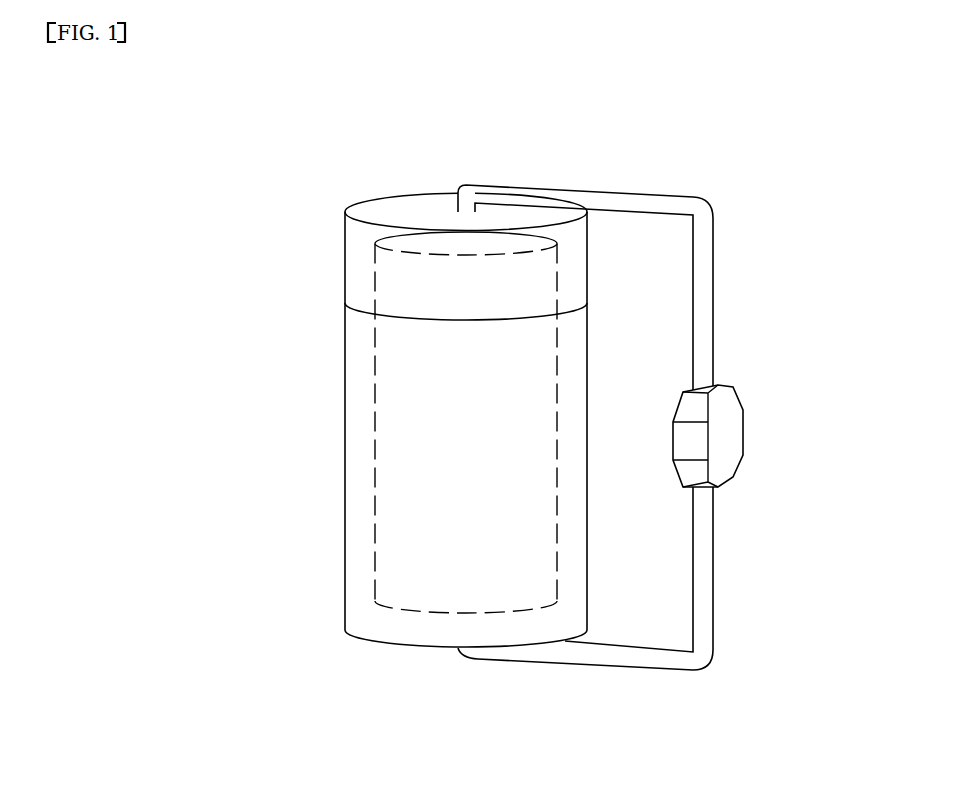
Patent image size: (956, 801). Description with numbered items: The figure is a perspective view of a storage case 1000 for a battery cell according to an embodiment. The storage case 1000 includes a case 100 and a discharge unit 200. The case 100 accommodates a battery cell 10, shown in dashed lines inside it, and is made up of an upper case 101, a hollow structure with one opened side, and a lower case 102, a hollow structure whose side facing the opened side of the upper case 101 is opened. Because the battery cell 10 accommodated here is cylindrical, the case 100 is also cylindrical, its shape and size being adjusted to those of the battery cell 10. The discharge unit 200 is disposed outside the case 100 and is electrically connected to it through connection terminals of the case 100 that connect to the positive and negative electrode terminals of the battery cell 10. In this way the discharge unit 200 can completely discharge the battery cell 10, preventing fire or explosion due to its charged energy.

The storage case 1000 is at (192, 178).
The case 100 is at (240, 258).
The upper case 101 is at (358, 259).
The lower case 102 is at (358, 385).
The battery cell 10 is at (395, 510).
The discharge unit 200 is at (733, 432).